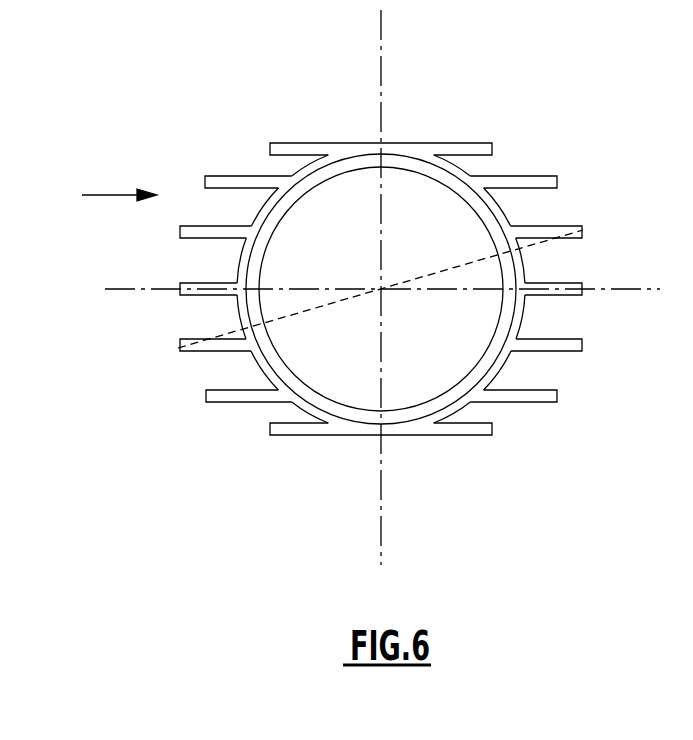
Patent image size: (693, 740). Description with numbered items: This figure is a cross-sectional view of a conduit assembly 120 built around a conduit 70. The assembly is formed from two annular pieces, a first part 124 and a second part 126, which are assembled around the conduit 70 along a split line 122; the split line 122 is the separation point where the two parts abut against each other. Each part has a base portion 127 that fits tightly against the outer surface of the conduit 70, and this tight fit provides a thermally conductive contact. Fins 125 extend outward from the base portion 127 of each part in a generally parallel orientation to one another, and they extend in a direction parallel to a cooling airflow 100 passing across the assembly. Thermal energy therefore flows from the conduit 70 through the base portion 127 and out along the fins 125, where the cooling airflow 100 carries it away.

The conduit 70 is at (289, 189).
The cooling airflow 100 is at (113, 195).
The conduit assembly 120 is at (381, 331).
The split line 122 is at (202, 344).
The first part 124 is at (460, 172).
The fins 125 is at (514, 406).
The second part 126 is at (305, 408).
The base portion 127 is at (503, 370).